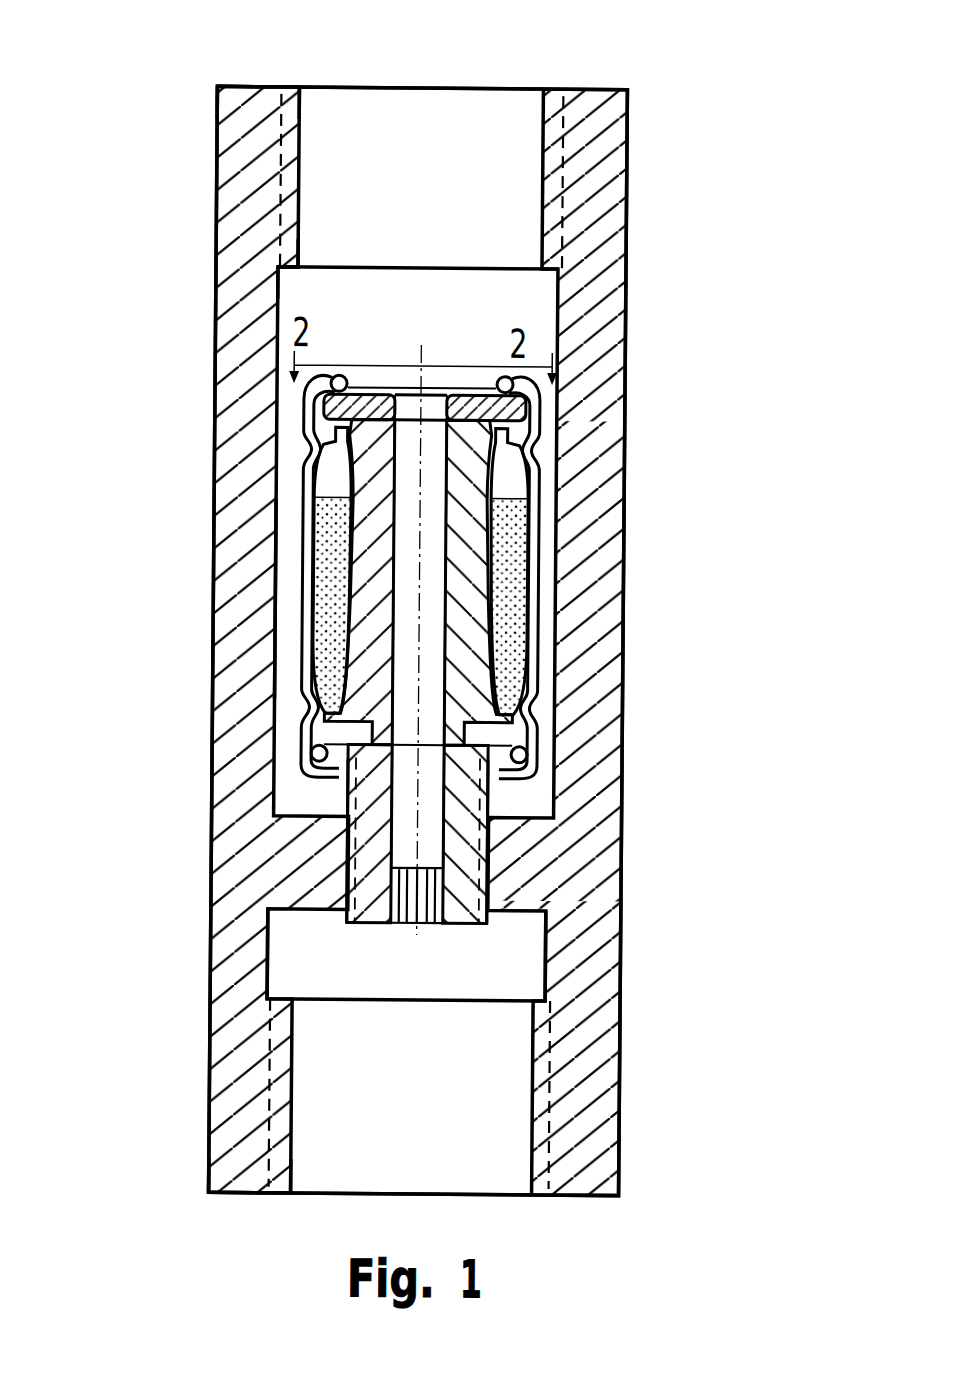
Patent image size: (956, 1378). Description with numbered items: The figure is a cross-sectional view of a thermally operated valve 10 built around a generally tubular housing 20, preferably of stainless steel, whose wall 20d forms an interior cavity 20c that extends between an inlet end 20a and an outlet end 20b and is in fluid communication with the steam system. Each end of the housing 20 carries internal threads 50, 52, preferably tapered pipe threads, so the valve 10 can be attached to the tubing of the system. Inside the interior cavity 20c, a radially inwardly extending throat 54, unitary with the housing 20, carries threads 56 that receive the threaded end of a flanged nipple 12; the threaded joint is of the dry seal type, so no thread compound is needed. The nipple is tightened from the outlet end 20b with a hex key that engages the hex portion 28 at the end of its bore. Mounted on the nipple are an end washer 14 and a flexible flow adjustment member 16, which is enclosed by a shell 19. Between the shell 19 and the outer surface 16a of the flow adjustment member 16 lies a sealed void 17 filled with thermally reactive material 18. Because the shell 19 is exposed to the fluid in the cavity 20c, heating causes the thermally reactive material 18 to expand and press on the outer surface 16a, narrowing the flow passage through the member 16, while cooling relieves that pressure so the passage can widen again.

The valve 10 is at (636, 486).
The flanged nipple 12 is at (465, 822).
The end washer 14 is at (538, 409).
The flexible flow adjustment member 16 is at (479, 530).
The outer surface 16a is at (330, 637).
The sealed void 17 is at (305, 453).
The thermally reactive material 18 is at (516, 630).
The shell 19 is at (309, 514).
The housing 20 is at (623, 205).
The inlet end 20a is at (214, 105).
The outlet end 20b is at (209, 1150).
The interior cavity 20c is at (282, 576).
The wall 20d is at (290, 294).
The hex portion 28 is at (405, 892).
The internal threads 50 is at (536, 150).
The internal threads 52 is at (558, 1138).
The throat 54 is at (509, 871).
The threads 56 is at (508, 872).